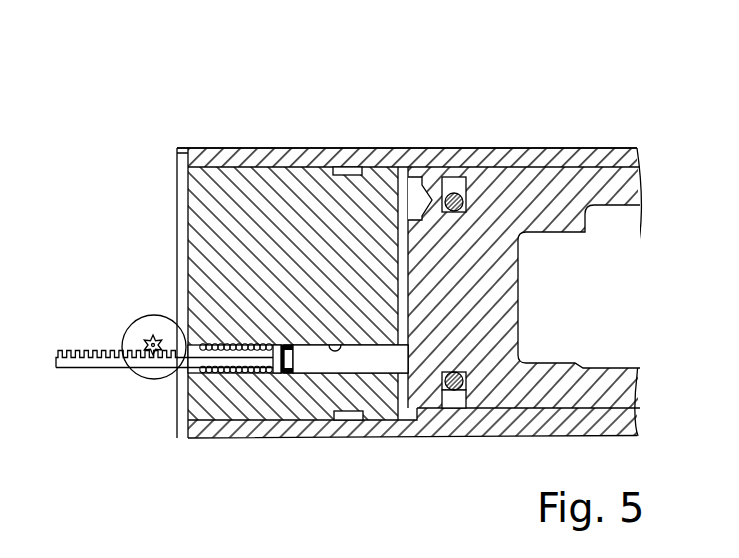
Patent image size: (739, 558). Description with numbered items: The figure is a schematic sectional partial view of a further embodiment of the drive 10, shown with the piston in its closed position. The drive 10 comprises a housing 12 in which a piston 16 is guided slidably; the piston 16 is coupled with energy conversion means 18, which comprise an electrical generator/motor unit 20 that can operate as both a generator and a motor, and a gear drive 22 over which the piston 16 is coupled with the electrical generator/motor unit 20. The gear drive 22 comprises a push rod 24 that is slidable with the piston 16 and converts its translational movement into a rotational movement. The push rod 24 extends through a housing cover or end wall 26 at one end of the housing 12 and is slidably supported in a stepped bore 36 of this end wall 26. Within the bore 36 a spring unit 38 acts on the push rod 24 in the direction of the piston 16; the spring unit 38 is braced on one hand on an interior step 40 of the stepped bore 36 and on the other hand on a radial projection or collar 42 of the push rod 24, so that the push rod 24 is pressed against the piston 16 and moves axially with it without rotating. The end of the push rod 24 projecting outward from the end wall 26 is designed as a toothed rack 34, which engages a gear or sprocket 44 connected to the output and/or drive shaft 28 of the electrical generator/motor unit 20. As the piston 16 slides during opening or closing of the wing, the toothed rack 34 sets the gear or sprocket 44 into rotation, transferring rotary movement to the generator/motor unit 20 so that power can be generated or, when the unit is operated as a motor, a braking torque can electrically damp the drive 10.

The drive 10 is at (421, 90).
The housing 12 is at (605, 157).
The piston 16 is at (528, 172).
The energy conversion means 18 is at (140, 288).
The electrical generator/motor unit 20 is at (137, 335).
The gear drive 22 is at (136, 395).
The push rod 24 is at (381, 360).
The housing cover or end wall 26 is at (285, 190).
The output and/or drive shaft 28 is at (154, 338).
The toothed rack 34 is at (80, 368).
The stepped bore 36 is at (344, 345).
The spring unit 38 is at (265, 372).
The interior step 40 is at (228, 345).
The radial projection or collar 42 is at (277, 372).
The gear or sprocket 44 is at (144, 344).